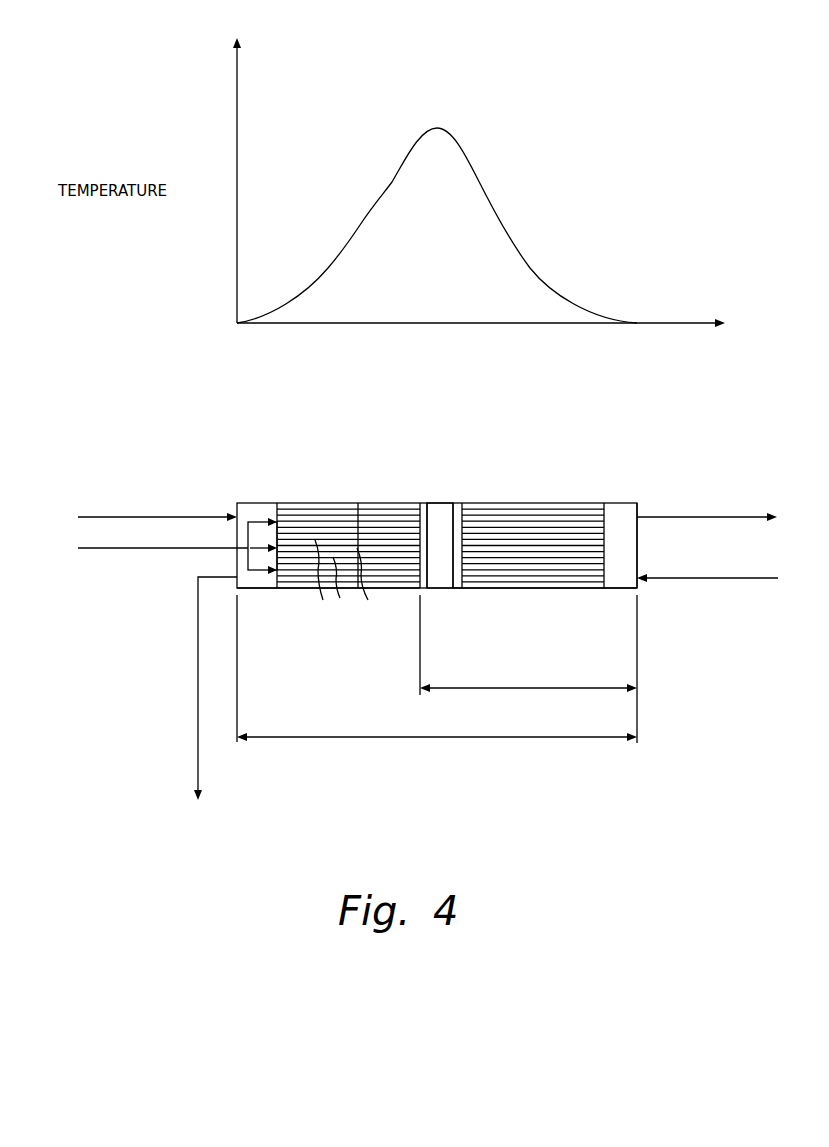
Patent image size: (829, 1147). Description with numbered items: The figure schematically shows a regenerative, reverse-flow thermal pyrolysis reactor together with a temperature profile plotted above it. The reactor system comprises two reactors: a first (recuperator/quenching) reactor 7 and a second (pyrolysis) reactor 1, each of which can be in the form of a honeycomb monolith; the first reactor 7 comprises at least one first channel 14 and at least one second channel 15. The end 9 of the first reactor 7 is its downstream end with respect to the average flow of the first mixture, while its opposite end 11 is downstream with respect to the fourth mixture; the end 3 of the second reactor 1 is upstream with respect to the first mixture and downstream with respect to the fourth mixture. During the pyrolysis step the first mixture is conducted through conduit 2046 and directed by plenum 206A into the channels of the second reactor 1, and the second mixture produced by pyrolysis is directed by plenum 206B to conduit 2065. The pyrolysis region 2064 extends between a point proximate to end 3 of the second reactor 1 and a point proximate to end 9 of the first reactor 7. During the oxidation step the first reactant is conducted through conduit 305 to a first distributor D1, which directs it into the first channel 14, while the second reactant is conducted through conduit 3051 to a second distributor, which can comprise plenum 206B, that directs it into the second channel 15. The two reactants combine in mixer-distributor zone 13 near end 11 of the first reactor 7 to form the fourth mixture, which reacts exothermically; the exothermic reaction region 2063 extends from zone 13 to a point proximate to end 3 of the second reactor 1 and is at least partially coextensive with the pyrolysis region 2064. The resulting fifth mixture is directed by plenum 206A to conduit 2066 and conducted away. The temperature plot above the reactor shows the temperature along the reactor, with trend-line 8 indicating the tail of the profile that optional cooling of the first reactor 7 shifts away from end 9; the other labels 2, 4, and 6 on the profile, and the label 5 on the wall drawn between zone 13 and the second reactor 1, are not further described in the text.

The second (pyrolysis) reactor 1 is at (508, 518).
The temperature peak region 2 is at (487, 197).
The end of second reactor 3 is at (605, 520).
The rising temperature region 4 is at (392, 182).
The partition wall 5 is at (453, 518).
The falling temperature region 6 is at (530, 268).
The first (recuperator/quenching) reactor 7 is at (348, 503).
The trend-line 8 is at (328, 268).
The downstream end of first reactor 9 is at (274, 516).
The downstream end of first reactor 11 is at (430, 547).
The mixer-distributor zone 13 is at (440, 585).
The first channel 14 is at (327, 584).
The second channel 15 is at (368, 566).
The first distributor D1 is at (248, 537).
The conduit 305 is at (105, 556).
The conduit 3051 is at (102, 513).
The plenum 206A is at (625, 588).
The plenum 206B is at (252, 588).
The conduit 2046 is at (737, 583).
The exothermic reaction region 2063 is at (497, 687).
The pyrolysis region 2064 is at (400, 737).
The conduit 2065 is at (195, 678).
The conduit 2066 is at (737, 513).